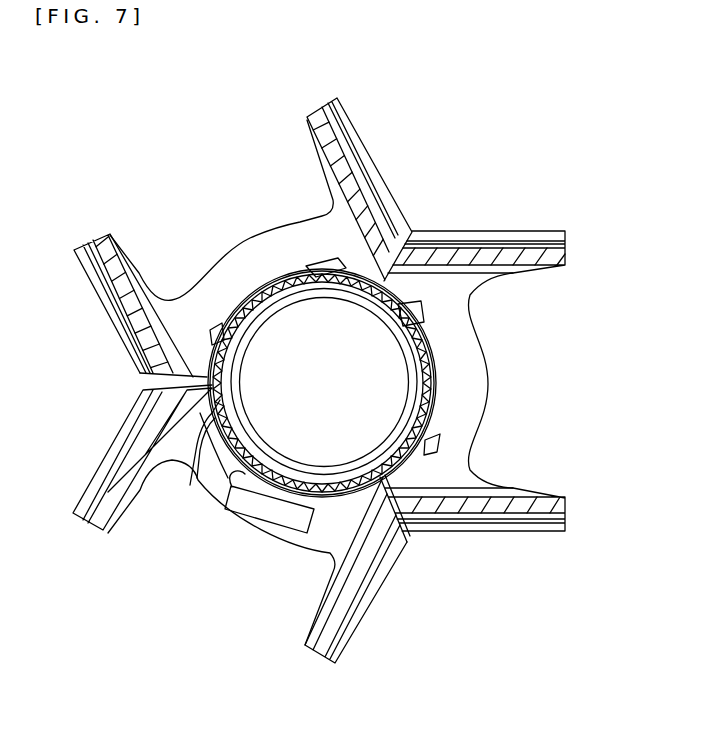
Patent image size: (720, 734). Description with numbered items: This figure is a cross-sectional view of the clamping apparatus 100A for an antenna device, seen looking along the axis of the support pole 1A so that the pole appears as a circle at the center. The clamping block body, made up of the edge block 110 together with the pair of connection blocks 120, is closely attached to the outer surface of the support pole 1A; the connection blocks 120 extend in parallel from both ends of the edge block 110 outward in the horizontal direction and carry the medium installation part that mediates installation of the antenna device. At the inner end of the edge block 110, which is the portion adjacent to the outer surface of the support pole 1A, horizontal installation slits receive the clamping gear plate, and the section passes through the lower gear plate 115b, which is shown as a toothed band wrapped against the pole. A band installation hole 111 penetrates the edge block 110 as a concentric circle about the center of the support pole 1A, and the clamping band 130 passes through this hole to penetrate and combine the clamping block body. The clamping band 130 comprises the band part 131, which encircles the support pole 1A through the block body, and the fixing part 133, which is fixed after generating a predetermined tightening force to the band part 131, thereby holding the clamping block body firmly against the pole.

The battery module assembly 100A is at (93, 101).
The edge block 110 is at (242, 252).
The band installation hole 111 is at (320, 260).
The connection block 120 is at (99, 242).
The support pole 1A is at (342, 296).
The lower gear plate 115b is at (420, 371).
The clamping band 130 is at (220, 592).
The band part 131 is at (190, 485).
The fixing part 133 is at (270, 498).